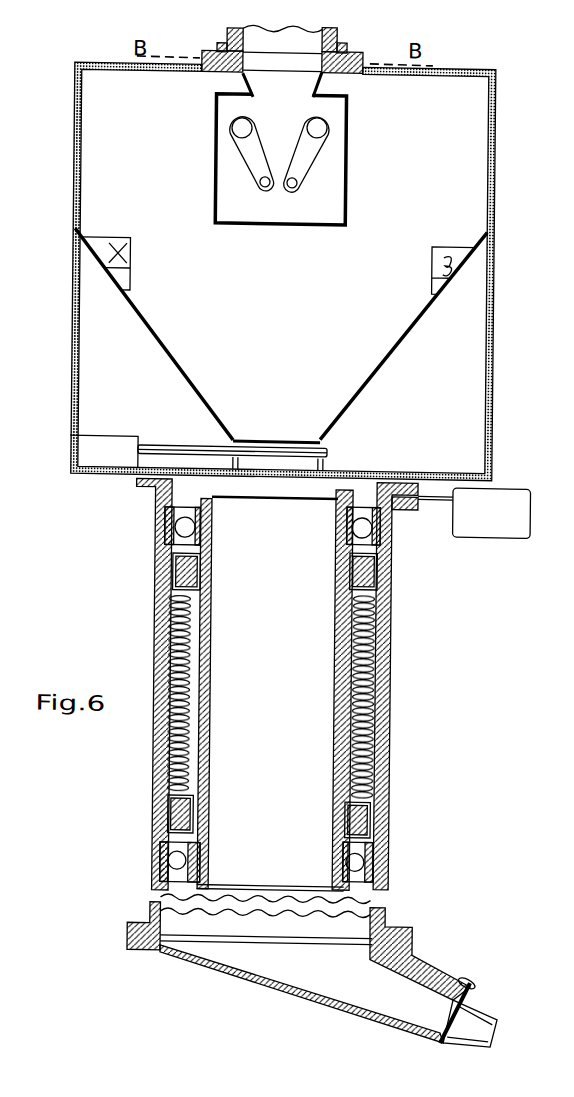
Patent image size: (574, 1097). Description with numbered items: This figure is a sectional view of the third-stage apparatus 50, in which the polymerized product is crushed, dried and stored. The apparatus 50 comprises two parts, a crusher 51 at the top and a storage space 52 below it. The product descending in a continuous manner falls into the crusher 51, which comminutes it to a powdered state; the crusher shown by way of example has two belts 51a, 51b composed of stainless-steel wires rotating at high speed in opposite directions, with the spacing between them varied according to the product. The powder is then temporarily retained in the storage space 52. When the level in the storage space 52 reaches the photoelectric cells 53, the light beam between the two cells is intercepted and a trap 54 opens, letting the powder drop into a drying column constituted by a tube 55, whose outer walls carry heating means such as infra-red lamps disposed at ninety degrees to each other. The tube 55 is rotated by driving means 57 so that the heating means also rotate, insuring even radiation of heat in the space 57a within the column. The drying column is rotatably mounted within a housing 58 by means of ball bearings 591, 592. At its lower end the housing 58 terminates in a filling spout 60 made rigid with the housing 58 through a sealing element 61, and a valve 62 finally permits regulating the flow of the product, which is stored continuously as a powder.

The apparatus 50 is at (470, 171).
The crusher 51 is at (316, 198).
The belt 51a is at (322, 162).
The belt 51b is at (224, 162).
The storage space 52 is at (280, 335).
The photoelectric cells 53 is at (444, 248).
The trap 54 is at (276, 453).
The tube 55 is at (213, 621).
The driving means 57 is at (474, 512).
The space 57a is at (269, 686).
The housing 58 is at (158, 622).
The ball bearing 591 is at (165, 530).
The ball bearing 592 is at (140, 862).
The filling spout 60 is at (421, 975).
The sealing element 61 is at (131, 940).
The valve 62 is at (477, 980).